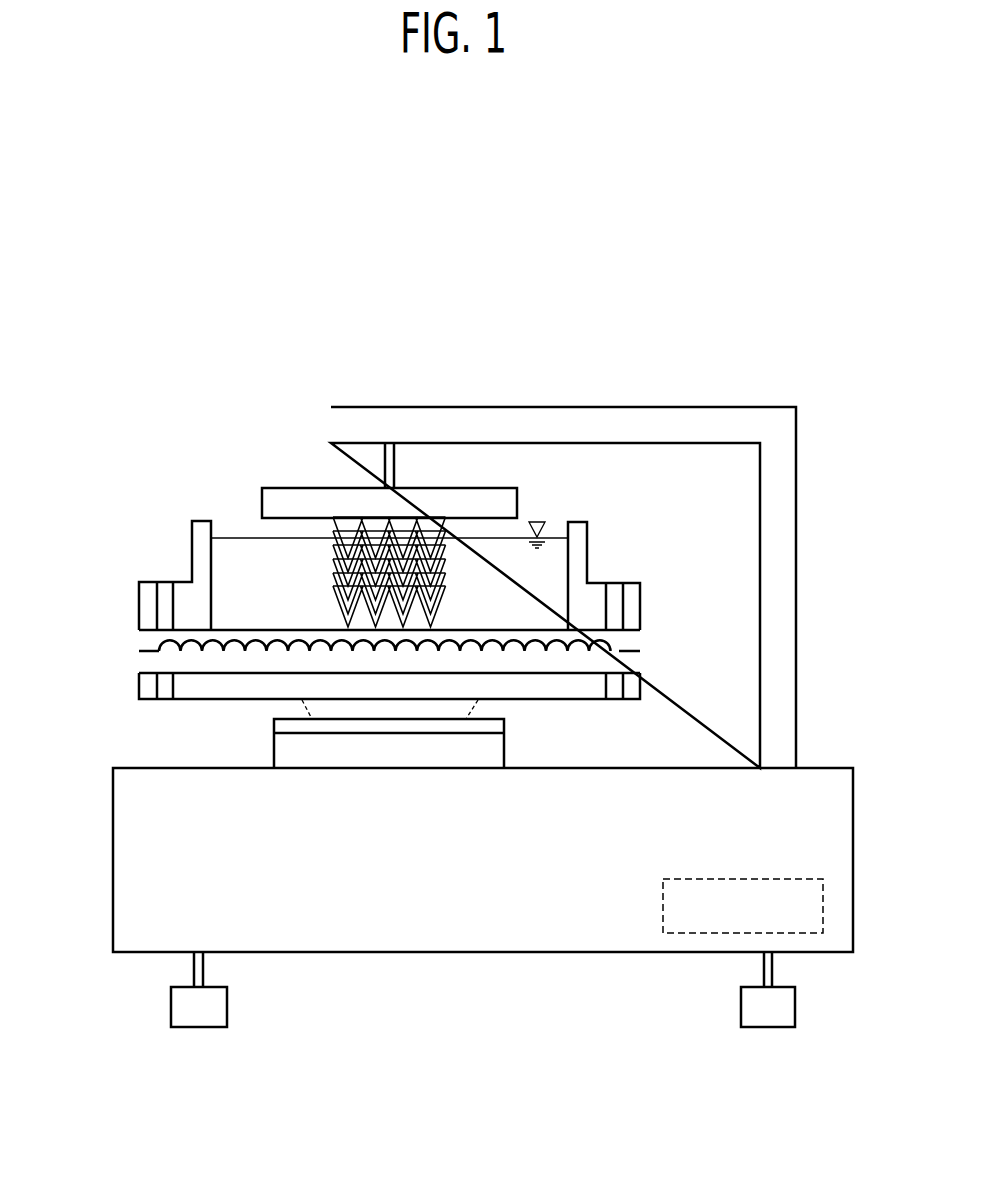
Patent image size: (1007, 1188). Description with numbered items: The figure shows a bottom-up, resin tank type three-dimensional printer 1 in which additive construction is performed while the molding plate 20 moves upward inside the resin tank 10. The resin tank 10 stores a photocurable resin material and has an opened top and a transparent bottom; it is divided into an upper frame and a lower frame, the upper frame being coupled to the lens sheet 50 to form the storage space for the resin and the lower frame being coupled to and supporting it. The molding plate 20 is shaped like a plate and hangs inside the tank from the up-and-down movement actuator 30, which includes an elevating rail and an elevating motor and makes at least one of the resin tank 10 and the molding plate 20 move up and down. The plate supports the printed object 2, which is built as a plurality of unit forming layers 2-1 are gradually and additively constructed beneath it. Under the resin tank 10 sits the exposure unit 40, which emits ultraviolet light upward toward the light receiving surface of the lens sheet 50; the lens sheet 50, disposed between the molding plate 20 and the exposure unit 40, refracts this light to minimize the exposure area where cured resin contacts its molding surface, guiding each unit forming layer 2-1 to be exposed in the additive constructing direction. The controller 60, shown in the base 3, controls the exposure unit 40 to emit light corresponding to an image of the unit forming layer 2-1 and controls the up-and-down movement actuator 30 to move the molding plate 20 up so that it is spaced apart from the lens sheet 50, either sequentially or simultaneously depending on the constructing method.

The 3D printer 1 is at (114, 410).
The printed object 2 is at (458, 519).
The unit forming layer 2-1 is at (437, 607).
The base 3 is at (845, 816).
The resin tank 10 is at (139, 592).
The molding plate 20 is at (290, 492).
The up-and-down movement actuator 30 is at (733, 412).
The exposure unit 40 is at (504, 724).
The lens sheet 50 is at (131, 632).
The controller 60 is at (823, 905).